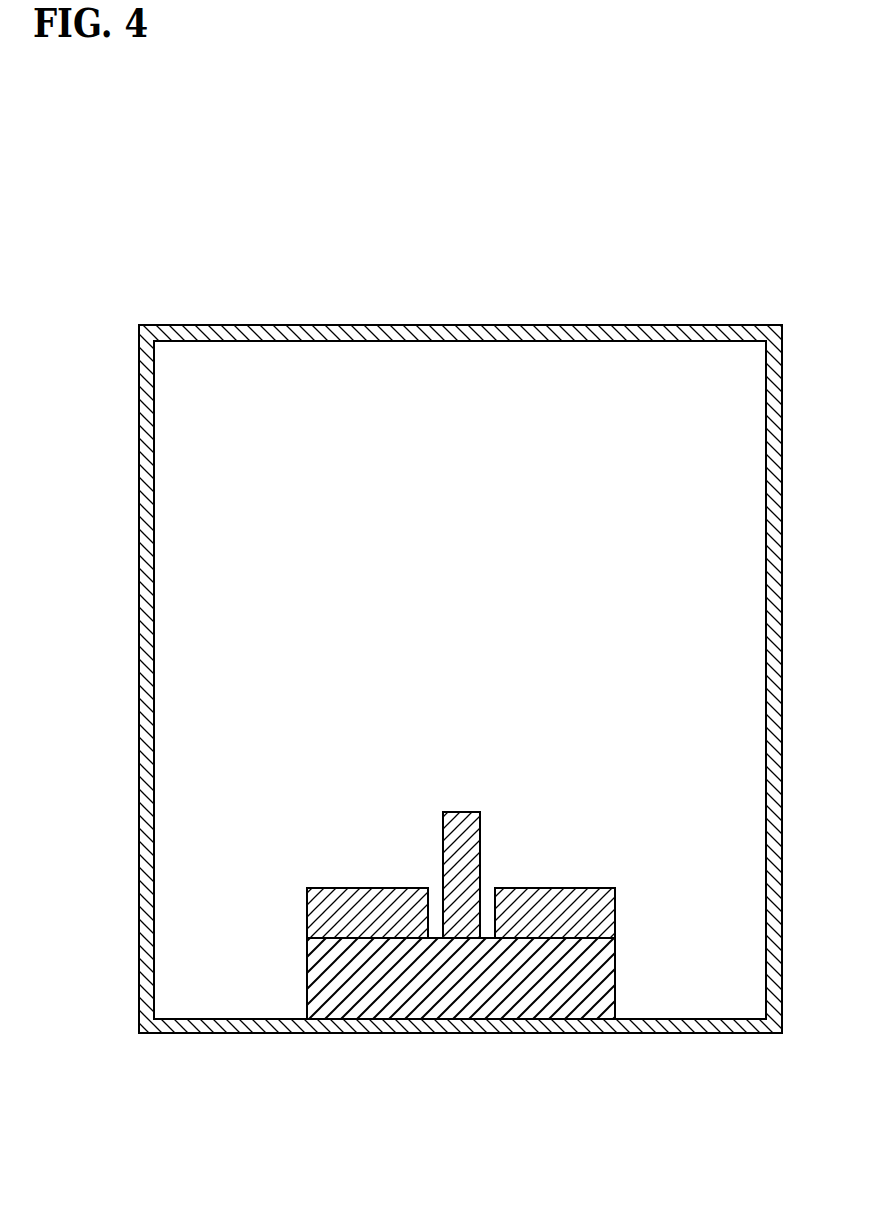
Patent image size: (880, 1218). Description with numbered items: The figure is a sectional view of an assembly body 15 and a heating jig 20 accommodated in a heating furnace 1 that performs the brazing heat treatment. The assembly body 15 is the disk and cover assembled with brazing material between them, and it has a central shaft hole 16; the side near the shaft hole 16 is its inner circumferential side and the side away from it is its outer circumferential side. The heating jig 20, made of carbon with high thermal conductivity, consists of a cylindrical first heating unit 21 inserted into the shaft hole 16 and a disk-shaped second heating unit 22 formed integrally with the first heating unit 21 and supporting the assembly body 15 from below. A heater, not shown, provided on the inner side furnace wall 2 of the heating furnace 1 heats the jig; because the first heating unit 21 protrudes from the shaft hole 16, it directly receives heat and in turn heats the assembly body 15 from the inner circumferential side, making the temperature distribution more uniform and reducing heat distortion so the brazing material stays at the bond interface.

The heating furnace 1 is at (495, 325).
The inner side furnace wall 2 is at (766, 740).
The assembly body 15 is at (615, 905).
The shaft hole 16 is at (488, 893).
The heating jig 20 is at (416, 905).
The first heating unit 21 is at (443, 838).
The second heating unit 22 is at (307, 967).